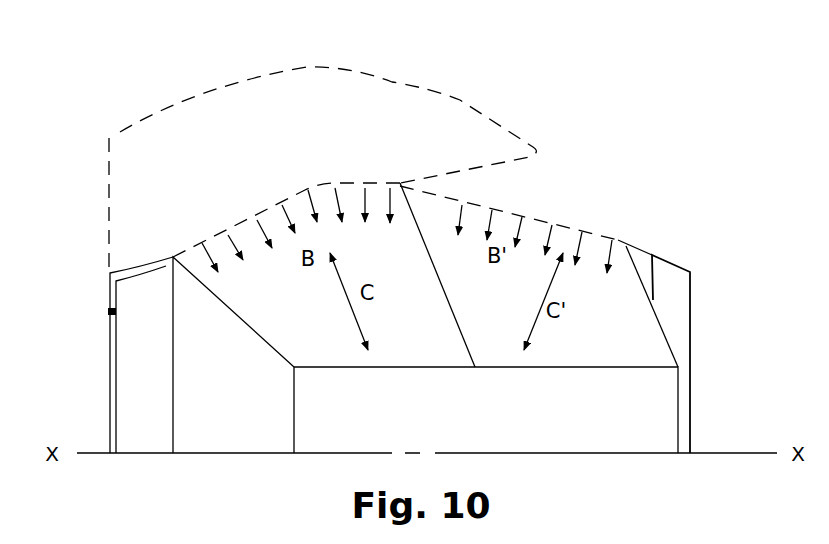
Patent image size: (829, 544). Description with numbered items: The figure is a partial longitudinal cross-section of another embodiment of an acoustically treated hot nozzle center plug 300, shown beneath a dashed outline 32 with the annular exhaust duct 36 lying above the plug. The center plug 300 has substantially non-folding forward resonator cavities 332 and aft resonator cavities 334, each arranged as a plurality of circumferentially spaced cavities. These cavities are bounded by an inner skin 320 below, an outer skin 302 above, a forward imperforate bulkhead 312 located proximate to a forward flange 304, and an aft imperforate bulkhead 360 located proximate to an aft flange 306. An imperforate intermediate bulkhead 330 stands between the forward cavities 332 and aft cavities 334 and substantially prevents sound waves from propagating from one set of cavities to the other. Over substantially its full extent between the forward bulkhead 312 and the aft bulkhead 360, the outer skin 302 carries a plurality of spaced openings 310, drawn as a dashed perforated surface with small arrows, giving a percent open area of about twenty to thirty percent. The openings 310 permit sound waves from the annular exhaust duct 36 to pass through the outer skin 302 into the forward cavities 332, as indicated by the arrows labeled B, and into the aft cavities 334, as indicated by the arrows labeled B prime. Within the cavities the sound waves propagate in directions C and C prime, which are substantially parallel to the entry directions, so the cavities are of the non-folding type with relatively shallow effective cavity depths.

The aircraft fuselage outline 32 is at (394, 82).
The annular exhaust duct 36 is at (292, 117).
The center plug 300 is at (649, 172).
The spaced openings 310 is at (218, 234).
The outer skin 302 is at (594, 232).
The forward flange 304 is at (108, 283).
The aft flange 306 is at (690, 272).
The forward imperforate bulkhead 312 is at (263, 343).
The aft imperforate bulkhead 360 is at (665, 330).
The imperforate intermediate bulkhead 330 is at (455, 320).
The inner skin 320 is at (565, 367).
The forward resonator cavities 332 is at (268, 302).
The aft resonator cavities 334 is at (492, 302).